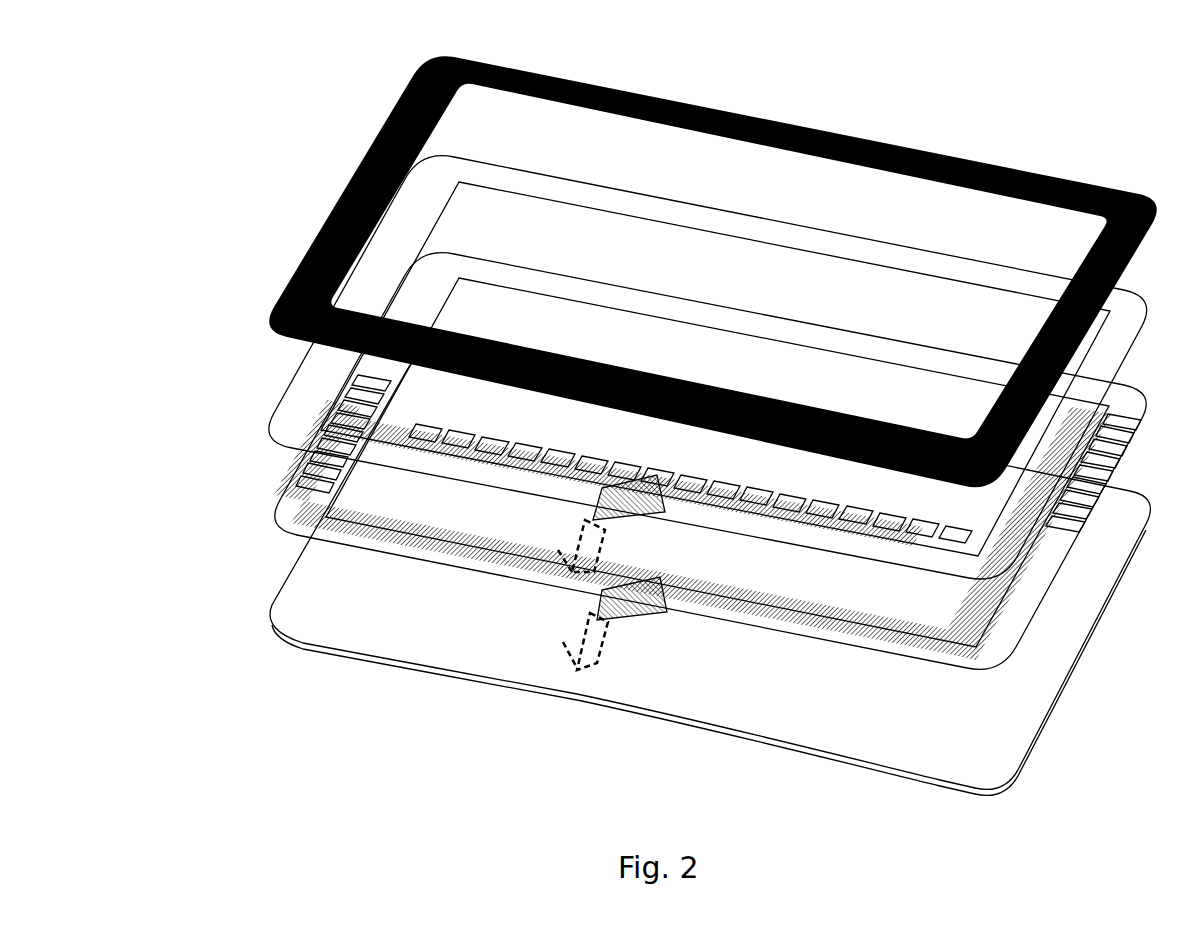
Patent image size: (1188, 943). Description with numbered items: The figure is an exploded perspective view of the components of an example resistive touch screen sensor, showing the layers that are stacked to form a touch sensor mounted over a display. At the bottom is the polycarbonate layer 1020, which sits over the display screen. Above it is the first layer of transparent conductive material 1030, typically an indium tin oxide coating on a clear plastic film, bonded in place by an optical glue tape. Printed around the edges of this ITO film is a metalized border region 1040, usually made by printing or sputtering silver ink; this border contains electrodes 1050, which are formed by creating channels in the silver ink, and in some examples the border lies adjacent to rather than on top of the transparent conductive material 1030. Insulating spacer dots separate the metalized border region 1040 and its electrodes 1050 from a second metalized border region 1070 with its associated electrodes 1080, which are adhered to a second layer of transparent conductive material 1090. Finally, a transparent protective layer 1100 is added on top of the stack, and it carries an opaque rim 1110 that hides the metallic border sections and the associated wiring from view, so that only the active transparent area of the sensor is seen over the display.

The polycarbonate layer 1020 is at (556, 675).
The first layer of transparent conductive material 1030 is at (510, 513).
The metalized border region 1040 is at (348, 547).
The electrodes 1050 is at (900, 632).
The metalized border region 1070 is at (302, 423).
The electrodes 1080 is at (742, 505).
The second layer of transparent conductive material 1090 is at (438, 234).
The transparent protective layer 1100 is at (686, 152).
The opaque rim 1110 is at (935, 145).